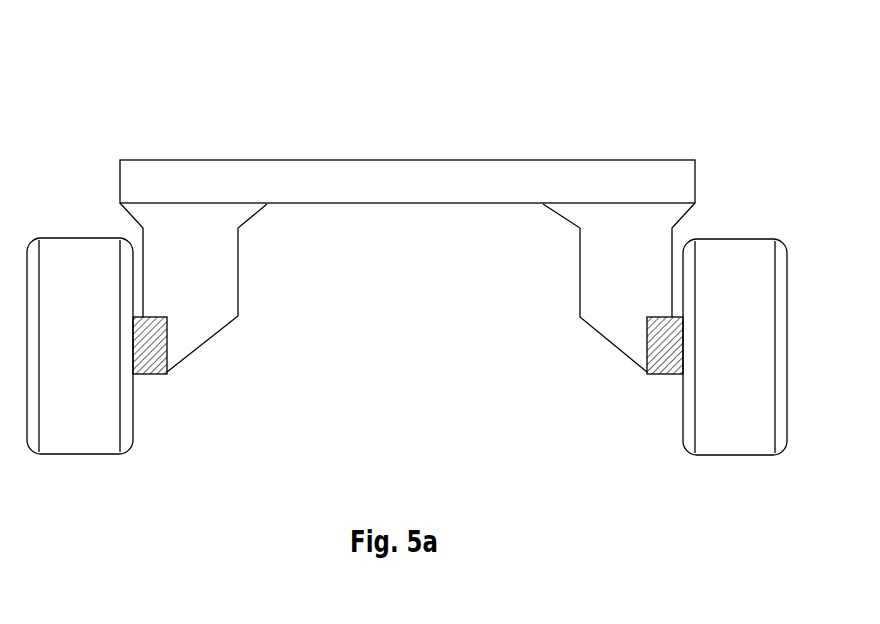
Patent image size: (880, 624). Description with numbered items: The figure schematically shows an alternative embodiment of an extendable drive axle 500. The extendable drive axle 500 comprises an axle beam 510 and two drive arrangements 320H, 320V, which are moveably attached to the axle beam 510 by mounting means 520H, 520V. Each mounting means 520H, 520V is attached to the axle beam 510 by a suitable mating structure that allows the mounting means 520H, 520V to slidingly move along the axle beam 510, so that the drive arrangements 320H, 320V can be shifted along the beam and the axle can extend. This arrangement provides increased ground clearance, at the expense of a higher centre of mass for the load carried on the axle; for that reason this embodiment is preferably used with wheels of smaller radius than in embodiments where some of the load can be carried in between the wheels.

The extendable drive axle 500 is at (108, 68).
The axle beam 510 is at (334, 172).
The drive arrangement 320V is at (190, 329).
The drive arrangement 320H is at (607, 327).
The mounting means 520V is at (153, 375).
The mounting means 520H is at (663, 378).